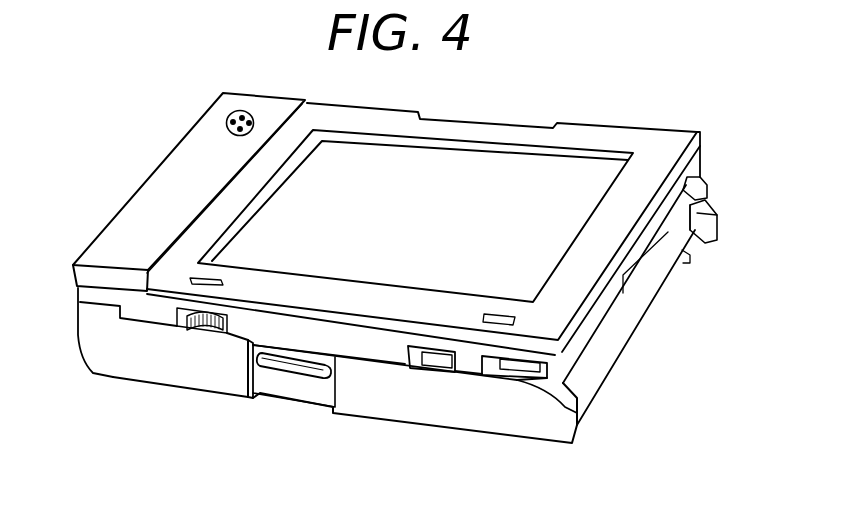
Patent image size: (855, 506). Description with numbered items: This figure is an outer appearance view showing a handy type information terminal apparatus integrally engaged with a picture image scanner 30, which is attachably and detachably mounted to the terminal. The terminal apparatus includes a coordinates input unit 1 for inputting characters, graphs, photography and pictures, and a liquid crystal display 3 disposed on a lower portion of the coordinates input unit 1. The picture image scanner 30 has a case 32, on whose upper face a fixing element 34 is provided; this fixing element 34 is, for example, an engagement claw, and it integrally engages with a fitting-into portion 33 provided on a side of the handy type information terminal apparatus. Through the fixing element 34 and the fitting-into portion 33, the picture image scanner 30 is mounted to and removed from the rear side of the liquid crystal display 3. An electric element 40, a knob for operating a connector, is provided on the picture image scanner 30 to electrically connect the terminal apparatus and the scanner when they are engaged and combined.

The coordinates input unit 1 is at (482, 160).
The liquid crystal display 3 is at (565, 188).
The picture image scanner 30 is at (515, 418).
The case 32 is at (203, 357).
The fitting-into portion 33 is at (428, 362).
The fixing element 34 is at (113, 310).
The electric element 40 is at (298, 378).